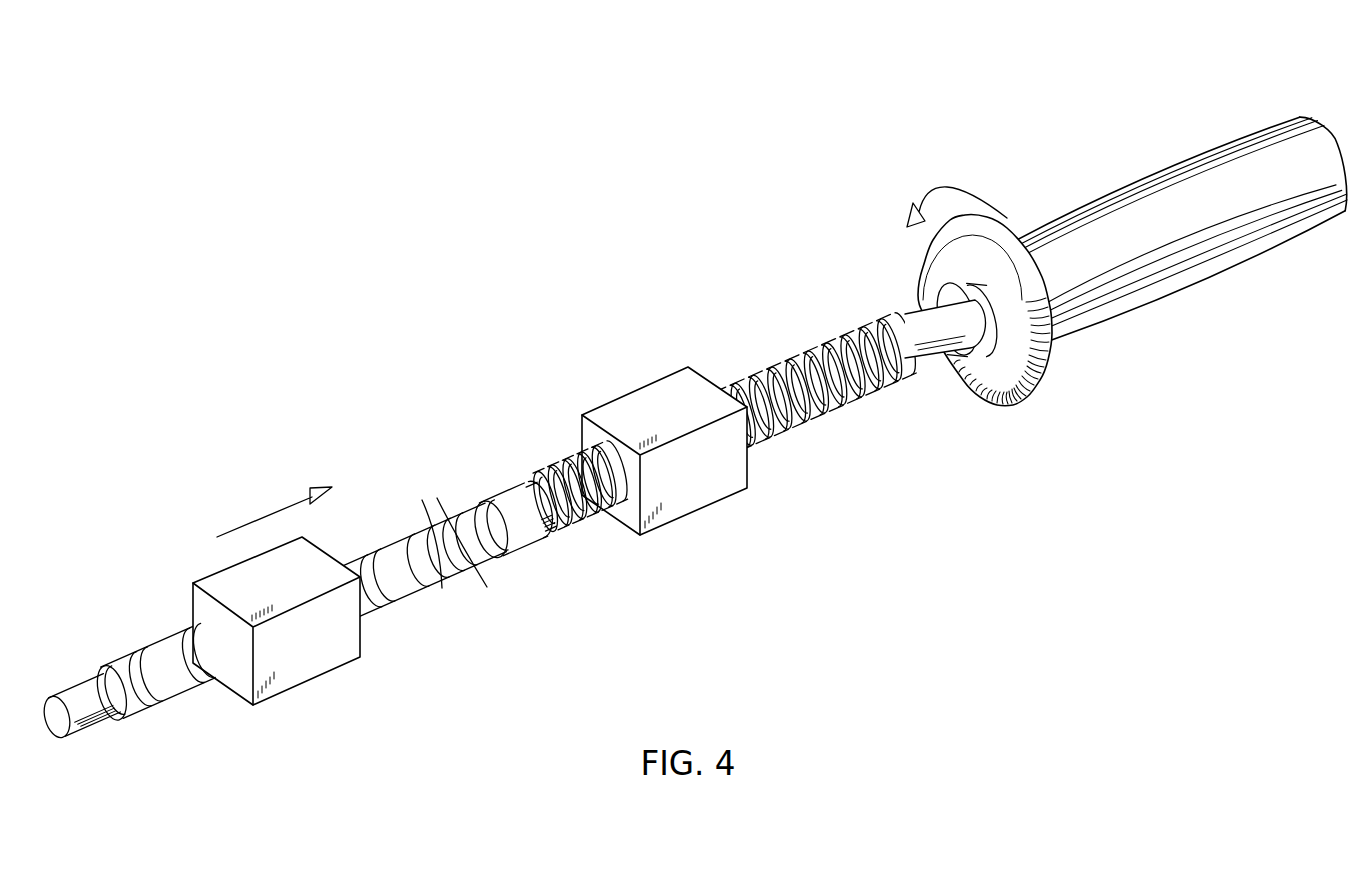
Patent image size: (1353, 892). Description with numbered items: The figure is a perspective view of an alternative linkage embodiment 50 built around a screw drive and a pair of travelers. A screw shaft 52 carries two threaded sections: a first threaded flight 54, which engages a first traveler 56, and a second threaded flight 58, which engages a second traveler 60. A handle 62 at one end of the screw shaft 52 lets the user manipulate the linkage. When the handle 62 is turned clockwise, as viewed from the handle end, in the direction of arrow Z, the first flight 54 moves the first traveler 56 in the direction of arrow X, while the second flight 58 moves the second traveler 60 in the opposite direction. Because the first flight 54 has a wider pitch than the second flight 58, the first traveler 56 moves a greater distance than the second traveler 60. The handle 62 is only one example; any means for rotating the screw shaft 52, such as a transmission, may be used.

The linkage embodiment 50 is at (413, 386).
The screw shaft 52 is at (75, 690).
The first threaded flight 54 is at (158, 700).
The first traveler 56 is at (335, 660).
The second threaded flight 58 is at (827, 412).
The second traveler 60 is at (722, 487).
The handle 62 is at (1182, 160).